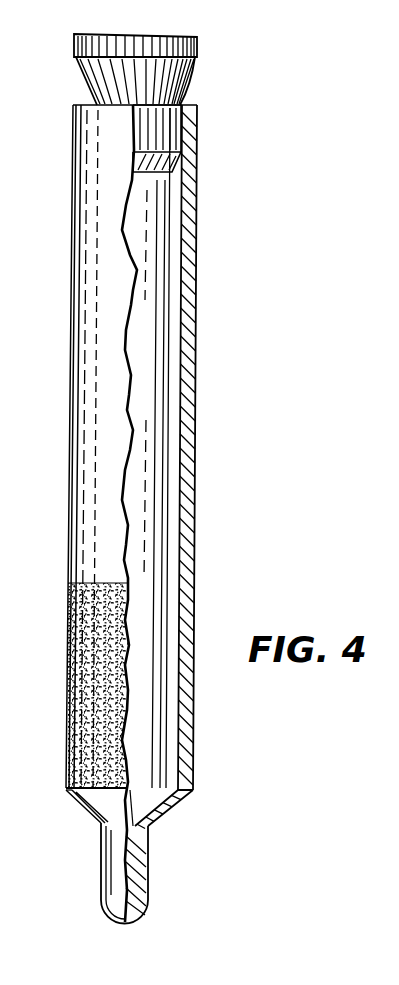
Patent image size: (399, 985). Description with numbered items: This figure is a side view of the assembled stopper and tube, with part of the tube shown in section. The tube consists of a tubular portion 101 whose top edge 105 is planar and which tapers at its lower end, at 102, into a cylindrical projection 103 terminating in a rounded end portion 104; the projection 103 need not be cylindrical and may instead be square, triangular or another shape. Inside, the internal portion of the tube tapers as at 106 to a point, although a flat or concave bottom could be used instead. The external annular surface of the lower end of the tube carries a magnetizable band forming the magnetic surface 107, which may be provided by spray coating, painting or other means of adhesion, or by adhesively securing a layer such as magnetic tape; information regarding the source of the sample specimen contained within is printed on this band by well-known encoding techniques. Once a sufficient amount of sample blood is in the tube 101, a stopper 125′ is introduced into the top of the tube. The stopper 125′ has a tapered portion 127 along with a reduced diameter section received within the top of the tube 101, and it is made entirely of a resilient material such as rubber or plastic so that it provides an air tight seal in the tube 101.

The stopper 125′ is at (191, 34).
The tapered portion 127 is at (194, 77).
The top edge 105 is at (191, 104).
The tubular portion 101 is at (197, 222).
The magnetic surface 107 is at (68, 678).
The internal tapered portion 106 is at (98, 818).
The tapered lower end 102 is at (179, 800).
The cylindrical projection 103 is at (97, 848).
The rounded end portion 104 is at (105, 919).